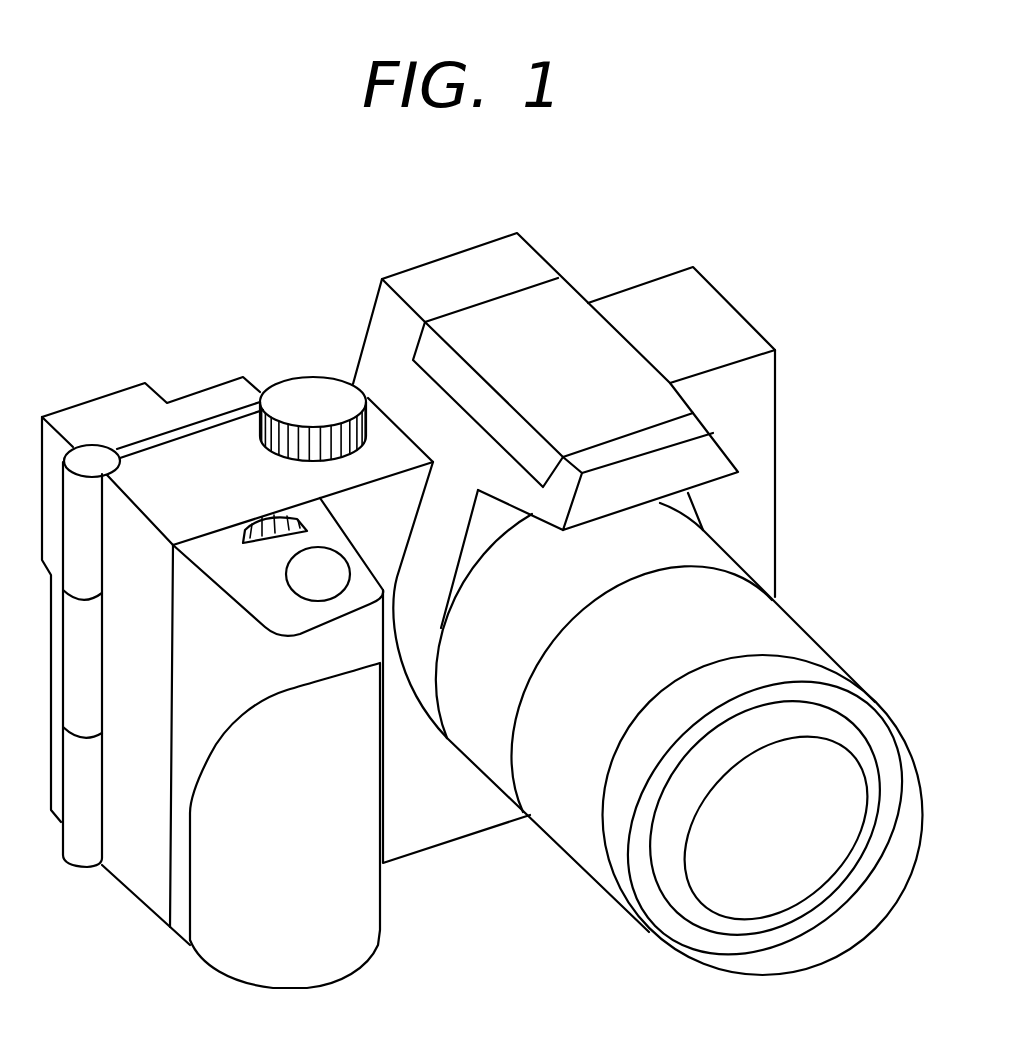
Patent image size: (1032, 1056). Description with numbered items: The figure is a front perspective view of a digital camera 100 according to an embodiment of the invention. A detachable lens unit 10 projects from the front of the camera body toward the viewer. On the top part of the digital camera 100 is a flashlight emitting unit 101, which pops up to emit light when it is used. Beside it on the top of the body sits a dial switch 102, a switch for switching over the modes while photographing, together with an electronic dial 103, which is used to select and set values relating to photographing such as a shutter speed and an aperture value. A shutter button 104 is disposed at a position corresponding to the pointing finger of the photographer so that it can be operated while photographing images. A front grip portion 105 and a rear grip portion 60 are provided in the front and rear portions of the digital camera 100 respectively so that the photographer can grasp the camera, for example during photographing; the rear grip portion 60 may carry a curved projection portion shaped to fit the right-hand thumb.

The digital camera 100 is at (650, 205).
The flashlight emitting unit 101 is at (584, 340).
The dial switch 102 is at (294, 393).
The electronic dial 103 is at (278, 507).
The shutter button 104 is at (298, 573).
The front grip portion 105 is at (254, 963).
The rear grip portion 60 is at (116, 407).
The detachable lens unit 10 is at (803, 629).